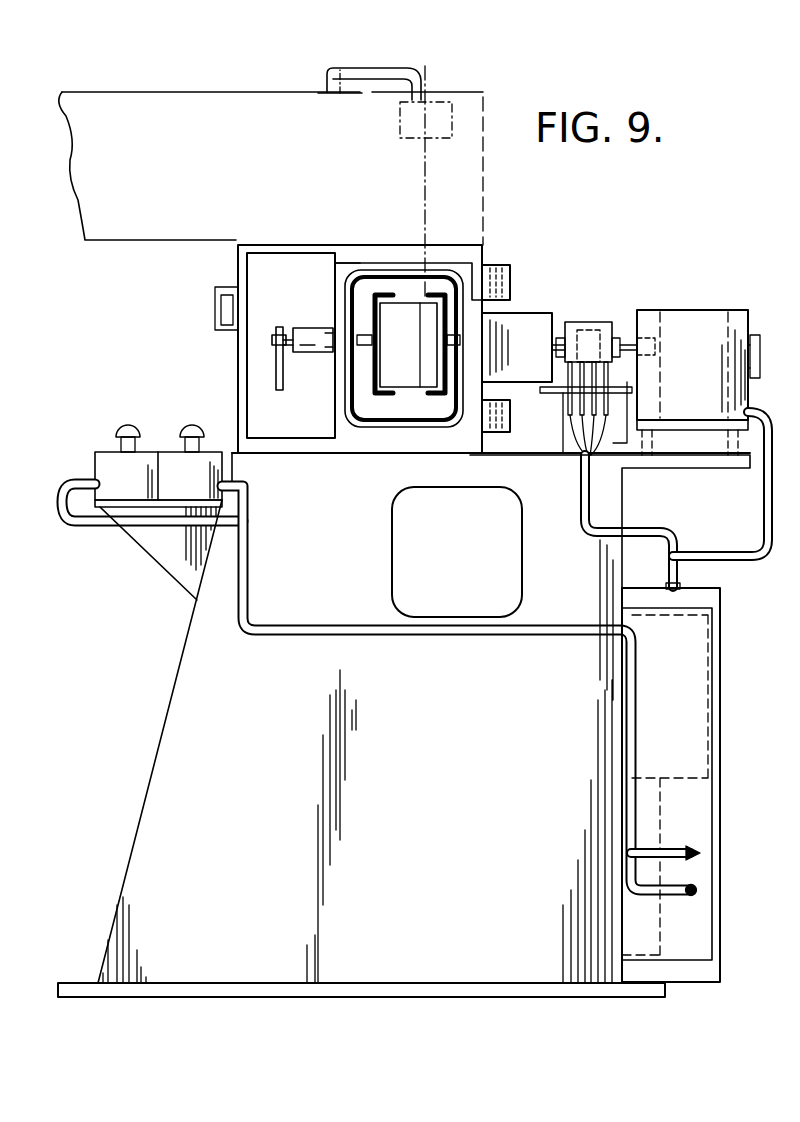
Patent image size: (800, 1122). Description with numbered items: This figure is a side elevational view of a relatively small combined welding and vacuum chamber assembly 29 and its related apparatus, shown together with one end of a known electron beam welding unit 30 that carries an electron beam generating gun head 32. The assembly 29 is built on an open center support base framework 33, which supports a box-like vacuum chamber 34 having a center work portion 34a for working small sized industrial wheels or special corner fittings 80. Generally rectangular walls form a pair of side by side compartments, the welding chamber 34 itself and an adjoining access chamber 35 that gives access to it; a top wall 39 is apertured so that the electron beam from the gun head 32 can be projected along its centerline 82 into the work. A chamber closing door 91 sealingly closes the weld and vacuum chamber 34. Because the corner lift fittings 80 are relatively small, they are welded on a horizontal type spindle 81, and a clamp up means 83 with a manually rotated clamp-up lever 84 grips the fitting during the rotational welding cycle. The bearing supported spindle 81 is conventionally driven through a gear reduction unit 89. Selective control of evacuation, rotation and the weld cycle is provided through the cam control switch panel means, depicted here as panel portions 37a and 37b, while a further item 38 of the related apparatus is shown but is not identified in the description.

The combined welding and vacuum chamber assembly 29 is at (549, 283).
The electron beam welding unit 30 is at (489, 203).
The electron beam generating gun head 32 is at (416, 84).
The open center support base framework 33 is at (183, 656).
The vacuum chamber 34 is at (475, 263).
The center work portion 34a is at (364, 402).
The access chamber 35 is at (258, 278).
The electrical connector 37a is at (604, 313).
The valve block 37b is at (110, 450).
The tank 38 is at (705, 668).
The top wall 39 is at (665, 818).
The special corner fittings 80 is at (402, 386).
The horizontal type spindle 81 is at (363, 362).
The centerline of the electron beam 82 is at (427, 186).
The clamp up means 83 is at (333, 355).
The clamp-up lever 84 is at (276, 372).
The gear reduction unit 89 is at (682, 322).
The chamber closing door 91 is at (344, 294).